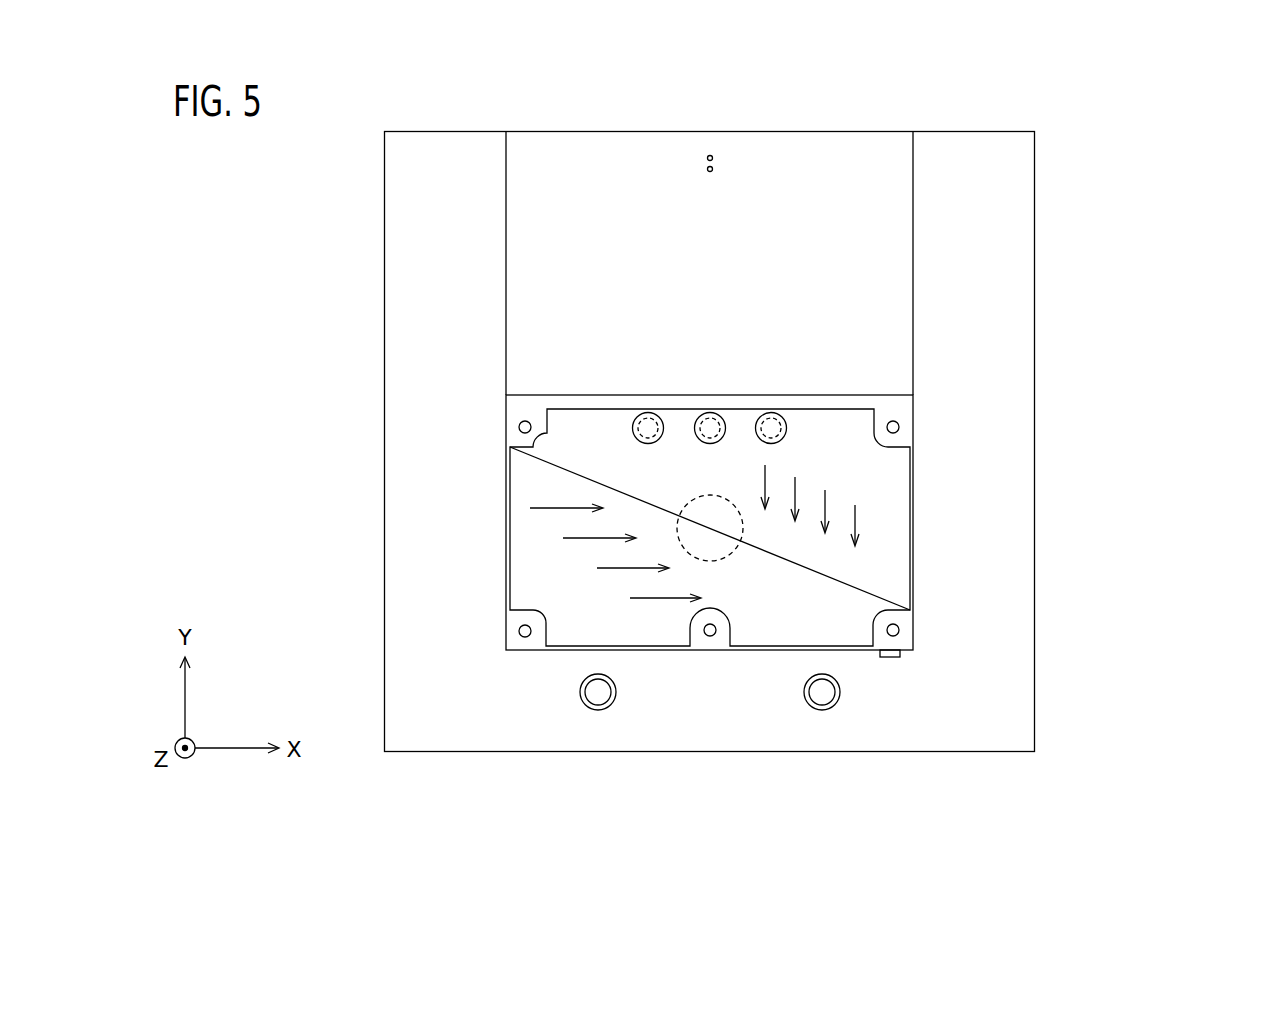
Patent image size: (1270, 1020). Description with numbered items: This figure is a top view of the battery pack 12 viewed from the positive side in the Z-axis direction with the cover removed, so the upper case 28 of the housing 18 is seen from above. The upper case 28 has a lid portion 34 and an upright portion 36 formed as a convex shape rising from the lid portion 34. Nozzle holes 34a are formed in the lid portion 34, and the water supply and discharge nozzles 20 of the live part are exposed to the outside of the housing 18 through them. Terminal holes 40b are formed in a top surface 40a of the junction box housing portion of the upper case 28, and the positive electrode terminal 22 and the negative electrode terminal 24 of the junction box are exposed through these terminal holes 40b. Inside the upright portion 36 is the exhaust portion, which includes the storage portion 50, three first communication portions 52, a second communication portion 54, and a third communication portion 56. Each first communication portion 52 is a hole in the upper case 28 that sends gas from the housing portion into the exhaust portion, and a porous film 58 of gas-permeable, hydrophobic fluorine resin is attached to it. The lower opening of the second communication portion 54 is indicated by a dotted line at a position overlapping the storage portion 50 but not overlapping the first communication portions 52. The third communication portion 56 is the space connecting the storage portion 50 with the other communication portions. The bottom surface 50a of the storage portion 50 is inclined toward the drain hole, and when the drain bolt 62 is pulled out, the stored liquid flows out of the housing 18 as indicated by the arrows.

The battery pack 12 is at (1248, 131).
The housing 18 is at (1068, 207).
The water supply and discharge nozzles 20 is at (598, 711).
The positive electrode terminal 22 is at (710, 155).
The negative electrode terminal 24 is at (713, 171).
The upper case 28 is at (1016, 375).
The lid portion 34 is at (1018, 646).
The nozzle holes 34a is at (617, 692).
The upright portion 36 is at (913, 563).
The top surface 40a is at (590, 148).
The terminal holes 40b is at (707, 158).
The storage portion 50 is at (530, 553).
The bottom surface 50a is at (878, 511).
The first communication portion 52 is at (640, 414).
The second communication portion 54 is at (723, 553).
The third communication portion 56 is at (535, 490).
The porous film 58 is at (660, 440).
The drain bolt 62 is at (890, 660).